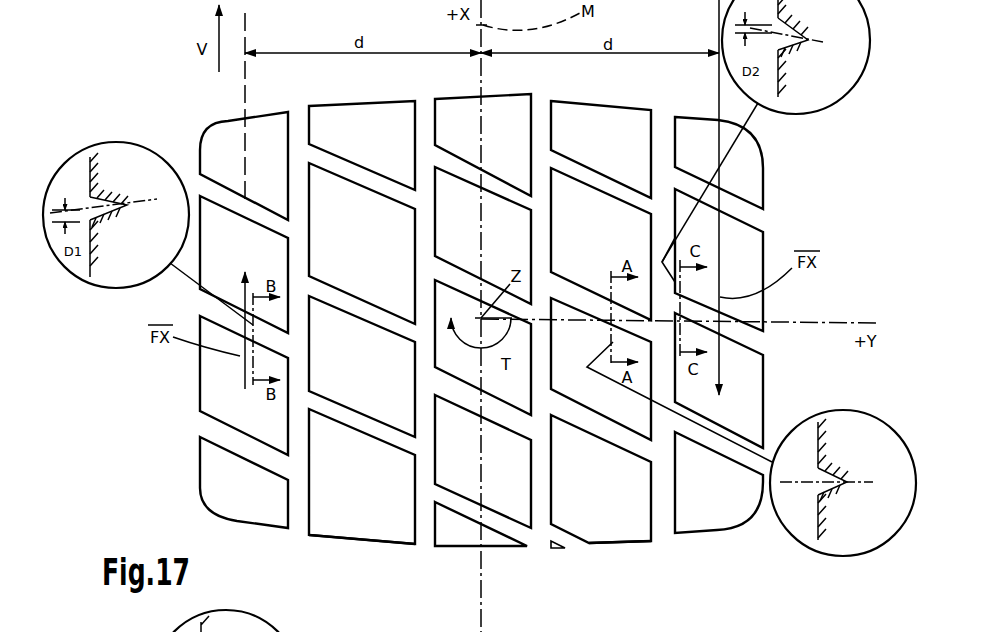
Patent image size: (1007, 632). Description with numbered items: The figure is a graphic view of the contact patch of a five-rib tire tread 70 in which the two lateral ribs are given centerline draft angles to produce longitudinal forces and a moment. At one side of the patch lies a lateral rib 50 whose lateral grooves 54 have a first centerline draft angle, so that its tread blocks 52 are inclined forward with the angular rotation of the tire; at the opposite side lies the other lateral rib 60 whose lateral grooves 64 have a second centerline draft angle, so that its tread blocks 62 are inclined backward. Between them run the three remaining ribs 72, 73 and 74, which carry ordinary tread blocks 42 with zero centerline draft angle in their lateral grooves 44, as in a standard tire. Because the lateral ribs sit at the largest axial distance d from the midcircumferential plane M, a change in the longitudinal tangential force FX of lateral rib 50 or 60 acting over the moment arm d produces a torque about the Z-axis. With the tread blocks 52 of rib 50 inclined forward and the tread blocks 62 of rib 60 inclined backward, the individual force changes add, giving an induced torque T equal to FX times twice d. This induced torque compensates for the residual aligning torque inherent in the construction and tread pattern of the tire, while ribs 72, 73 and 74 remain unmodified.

The tread block 42 is at (343, 505).
The lateral groove 44 is at (358, 173).
The lateral rib 50 is at (237, 523).
The tread block 52 is at (217, 380).
The lateral groove 54 is at (228, 200).
The lateral rib 60 is at (713, 532).
The tread block 62 is at (740, 418).
The lateral groove 64 is at (733, 195).
The tread 70 is at (777, 182).
The rib 72 is at (364, 546).
The rib 73 is at (462, 548).
The rib 74 is at (627, 545).